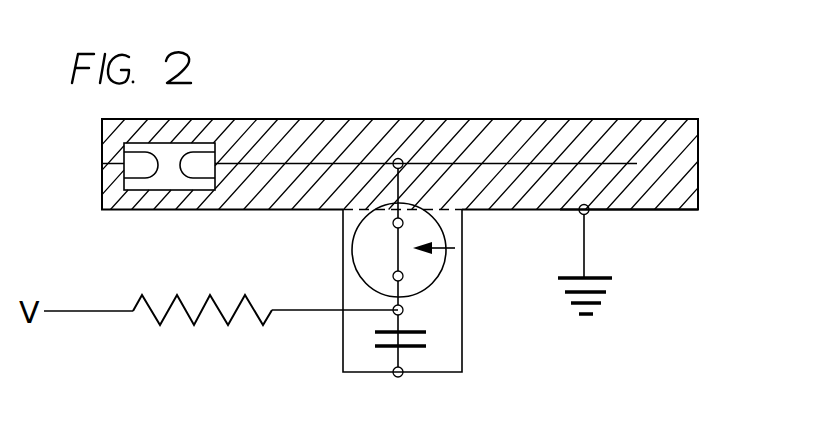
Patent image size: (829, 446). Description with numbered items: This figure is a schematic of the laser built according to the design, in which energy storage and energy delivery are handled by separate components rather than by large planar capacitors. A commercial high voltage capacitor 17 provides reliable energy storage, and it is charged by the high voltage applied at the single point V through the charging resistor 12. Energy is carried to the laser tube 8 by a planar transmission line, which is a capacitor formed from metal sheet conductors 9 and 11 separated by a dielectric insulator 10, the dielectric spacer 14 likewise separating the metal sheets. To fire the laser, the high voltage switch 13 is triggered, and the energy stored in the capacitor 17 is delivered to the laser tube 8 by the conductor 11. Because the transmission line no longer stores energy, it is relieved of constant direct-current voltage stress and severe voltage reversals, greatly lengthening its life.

The laser tube 8 is at (183, 143).
The metal sheet conductor 9 is at (323, 118).
The dielectric insulator 10 is at (551, 163).
The metal sheet conductor 11 is at (677, 211).
The charging resistor 12 is at (215, 320).
The high voltage switch 13 is at (438, 276).
The dielectric spacer 14 is at (632, 118).
The high voltage capacitor 17 is at (428, 338).